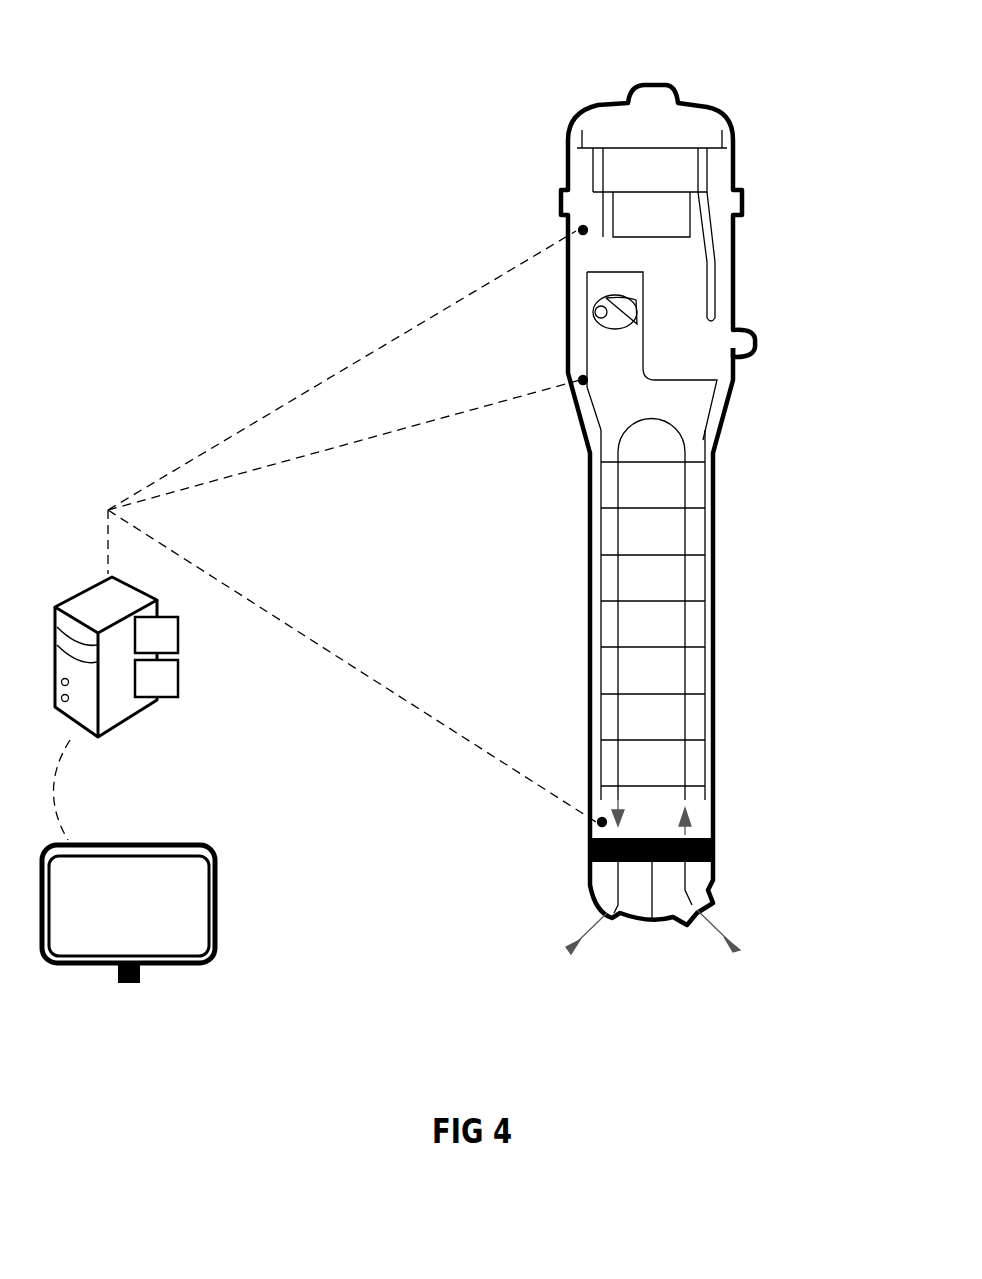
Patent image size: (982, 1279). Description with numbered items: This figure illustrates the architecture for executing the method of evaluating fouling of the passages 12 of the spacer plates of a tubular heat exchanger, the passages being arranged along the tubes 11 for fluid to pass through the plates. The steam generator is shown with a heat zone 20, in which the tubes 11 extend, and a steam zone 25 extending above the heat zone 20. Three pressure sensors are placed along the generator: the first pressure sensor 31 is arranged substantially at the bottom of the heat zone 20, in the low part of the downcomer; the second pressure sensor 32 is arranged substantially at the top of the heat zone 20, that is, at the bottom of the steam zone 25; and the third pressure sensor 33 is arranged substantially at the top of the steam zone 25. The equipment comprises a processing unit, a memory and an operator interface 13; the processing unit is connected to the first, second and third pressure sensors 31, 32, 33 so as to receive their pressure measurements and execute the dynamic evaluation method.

The tubes 11 is at (184, 633).
The passages 12 is at (185, 684).
The display 13 is at (132, 838).
The heat zone 20 is at (817, 348).
The steam zone 25 is at (817, 122).
The first pressure sensor 31 is at (588, 836).
The second pressure sensor 32 is at (578, 378).
The third pressure sensor 33 is at (578, 225).